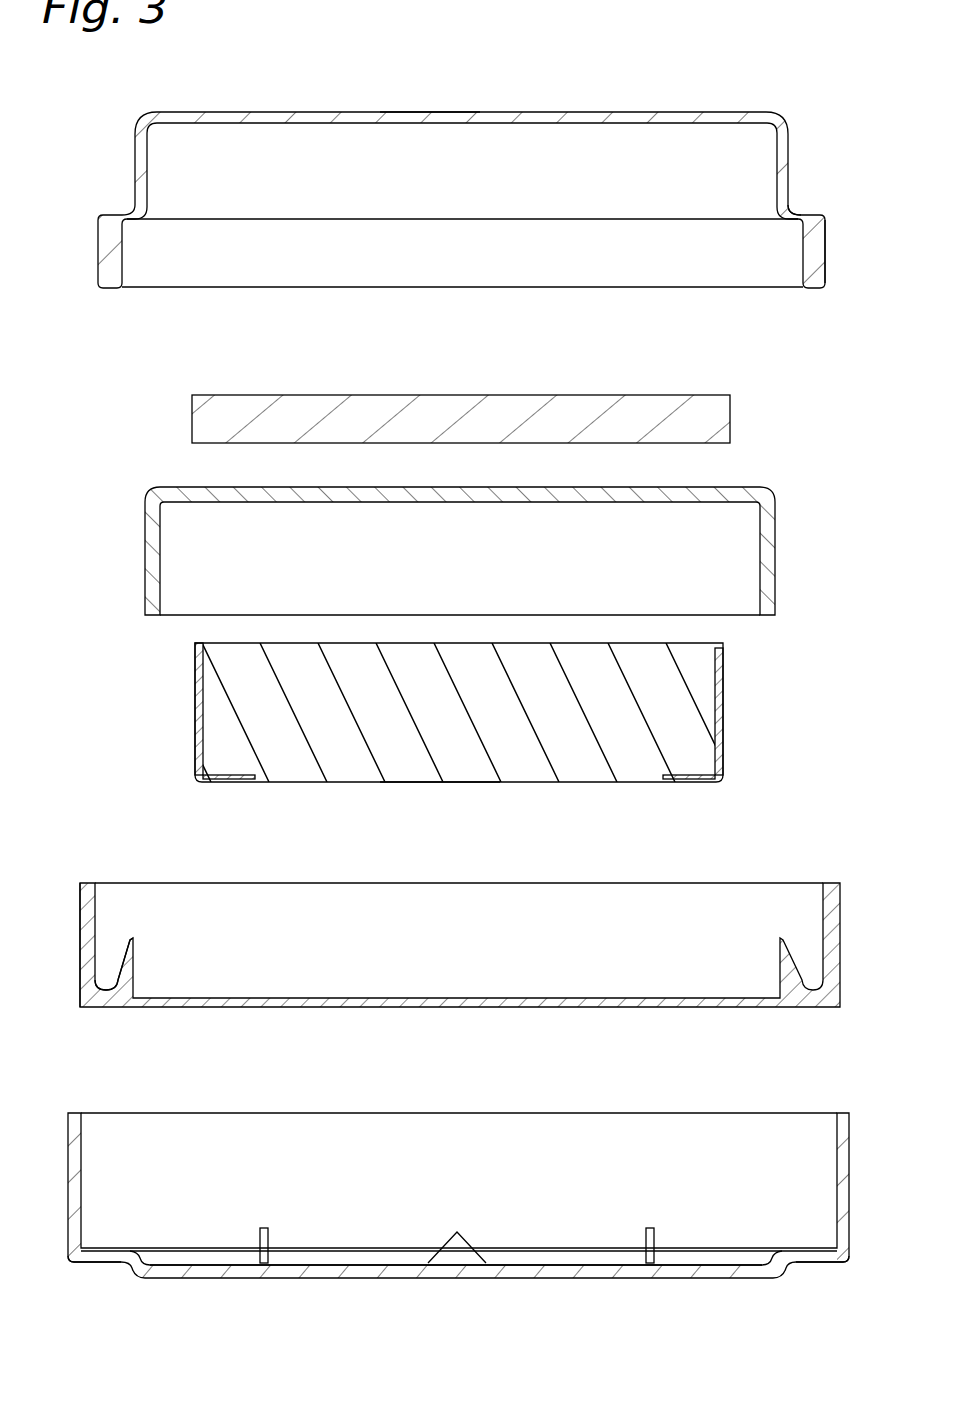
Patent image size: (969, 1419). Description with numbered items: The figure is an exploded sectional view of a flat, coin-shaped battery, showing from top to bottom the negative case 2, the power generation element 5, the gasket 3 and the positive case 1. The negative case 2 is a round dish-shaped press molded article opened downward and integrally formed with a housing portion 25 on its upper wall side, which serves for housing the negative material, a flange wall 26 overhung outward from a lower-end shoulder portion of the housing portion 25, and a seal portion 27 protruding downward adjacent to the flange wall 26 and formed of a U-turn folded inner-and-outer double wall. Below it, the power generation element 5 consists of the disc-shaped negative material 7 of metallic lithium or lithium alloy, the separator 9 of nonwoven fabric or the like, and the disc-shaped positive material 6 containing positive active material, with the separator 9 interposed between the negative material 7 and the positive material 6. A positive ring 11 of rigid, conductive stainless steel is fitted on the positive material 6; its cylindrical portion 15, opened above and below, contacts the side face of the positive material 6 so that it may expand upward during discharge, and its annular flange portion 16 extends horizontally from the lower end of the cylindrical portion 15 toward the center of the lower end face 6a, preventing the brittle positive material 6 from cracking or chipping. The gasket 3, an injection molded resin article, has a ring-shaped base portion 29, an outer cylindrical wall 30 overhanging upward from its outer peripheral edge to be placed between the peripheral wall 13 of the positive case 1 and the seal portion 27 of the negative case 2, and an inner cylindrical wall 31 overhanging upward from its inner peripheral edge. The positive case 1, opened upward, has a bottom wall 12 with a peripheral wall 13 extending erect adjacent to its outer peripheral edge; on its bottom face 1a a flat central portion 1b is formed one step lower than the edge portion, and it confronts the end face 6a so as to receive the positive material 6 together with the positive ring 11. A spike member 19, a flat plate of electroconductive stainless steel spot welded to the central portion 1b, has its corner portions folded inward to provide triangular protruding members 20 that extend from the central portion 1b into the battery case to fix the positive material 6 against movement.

The positive case 1 is at (468, 1202).
The bottom face 1a is at (100, 1247).
The central portion 1b is at (727, 1262).
The negative case 2 is at (486, 177).
The gasket 3 is at (444, 942).
The power generation element 5 is at (439, 591).
The positive material 6 is at (463, 745).
The end face 6a is at (436, 783).
The negative material 7 is at (553, 408).
The separator 9 is at (738, 487).
The positive ring 11 is at (724, 736).
The bottom wall 12 is at (232, 1283).
The peripheral wall 13 is at (850, 1130).
The cylindrical portion 15 is at (196, 678).
The annular flange portion 16 is at (220, 781).
The spike member 19 is at (345, 1252).
The protruding members 20 is at (259, 1234).
The housing portion 25 is at (425, 111).
The flange wall 26 is at (805, 210).
The seal portion 27 is at (827, 243).
The base portion 29 is at (100, 1007).
The outer cylindrical wall 30 is at (80, 912).
The inner cylindrical wall 31 is at (132, 962).